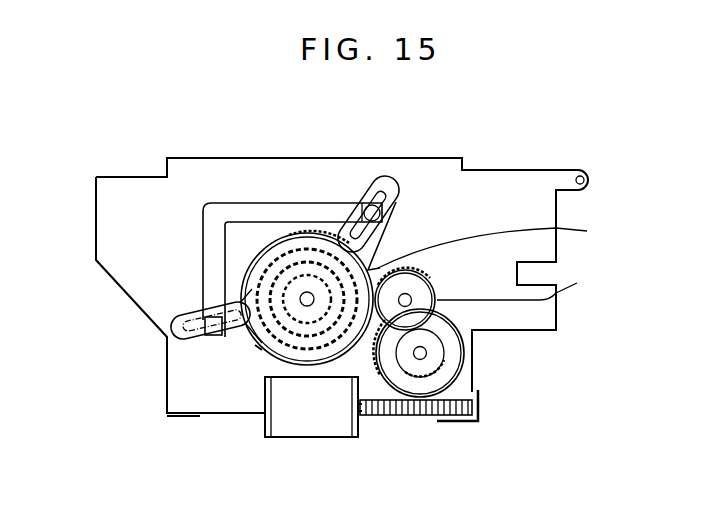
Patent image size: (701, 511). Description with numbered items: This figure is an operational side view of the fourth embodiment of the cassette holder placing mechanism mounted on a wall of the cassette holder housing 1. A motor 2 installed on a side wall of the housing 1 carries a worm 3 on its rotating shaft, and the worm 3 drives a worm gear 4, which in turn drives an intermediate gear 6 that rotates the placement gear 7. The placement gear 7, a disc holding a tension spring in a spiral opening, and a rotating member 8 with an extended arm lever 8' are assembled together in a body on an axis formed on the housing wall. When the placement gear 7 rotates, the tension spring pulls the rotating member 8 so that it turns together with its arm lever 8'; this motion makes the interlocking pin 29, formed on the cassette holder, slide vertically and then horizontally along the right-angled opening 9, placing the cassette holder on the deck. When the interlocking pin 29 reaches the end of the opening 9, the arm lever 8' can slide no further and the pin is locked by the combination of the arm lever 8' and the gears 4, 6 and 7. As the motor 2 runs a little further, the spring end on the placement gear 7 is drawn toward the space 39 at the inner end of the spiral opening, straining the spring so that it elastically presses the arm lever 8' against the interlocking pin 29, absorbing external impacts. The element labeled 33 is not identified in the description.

The cassette holder housing 1 is at (110, 177).
The right-angled opening 9 is at (222, 203).
The placement gear 7 is at (270, 233).
The arm lever 8' is at (384, 188).
The interlocking pin 29 is at (370, 183).
The space 39 is at (498, 271).
The intermediate gear 6 is at (522, 282).
The worm gear 4 is at (465, 373).
The rotating member 8 is at (220, 385).
The pin 33 is at (262, 337).
The motor 2 is at (317, 427).
The worm 3 is at (418, 417).